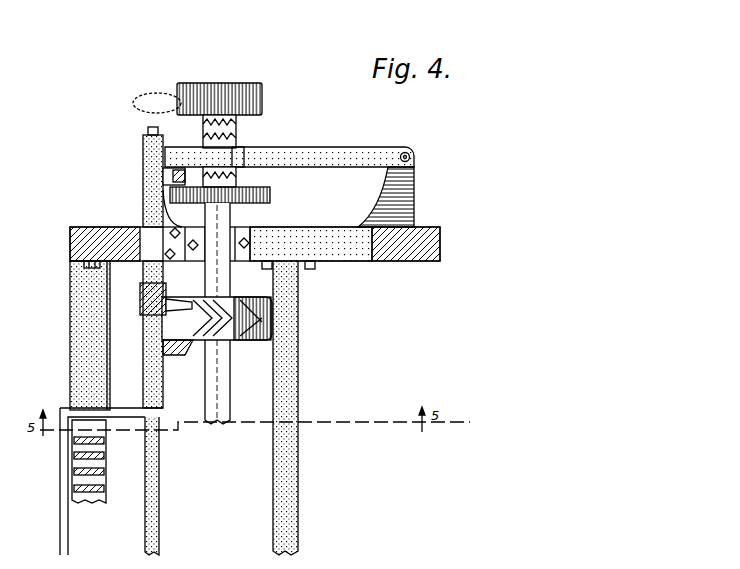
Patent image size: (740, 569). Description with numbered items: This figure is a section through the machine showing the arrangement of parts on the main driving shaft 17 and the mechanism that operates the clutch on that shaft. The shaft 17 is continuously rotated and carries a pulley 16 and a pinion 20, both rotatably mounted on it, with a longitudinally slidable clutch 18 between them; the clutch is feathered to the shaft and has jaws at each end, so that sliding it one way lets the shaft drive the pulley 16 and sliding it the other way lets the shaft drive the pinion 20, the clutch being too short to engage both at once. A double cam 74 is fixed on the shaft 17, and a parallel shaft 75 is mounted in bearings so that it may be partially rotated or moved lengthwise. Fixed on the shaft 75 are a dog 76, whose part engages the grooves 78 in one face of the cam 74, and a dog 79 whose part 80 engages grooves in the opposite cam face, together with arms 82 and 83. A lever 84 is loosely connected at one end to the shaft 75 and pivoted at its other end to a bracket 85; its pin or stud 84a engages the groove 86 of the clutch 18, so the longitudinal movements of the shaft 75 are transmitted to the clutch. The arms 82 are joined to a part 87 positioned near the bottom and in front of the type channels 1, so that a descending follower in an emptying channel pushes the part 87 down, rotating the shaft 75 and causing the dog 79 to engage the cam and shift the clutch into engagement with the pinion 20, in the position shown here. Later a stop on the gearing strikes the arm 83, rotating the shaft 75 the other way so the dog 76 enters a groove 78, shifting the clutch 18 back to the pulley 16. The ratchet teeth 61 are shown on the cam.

The channels 1 is at (106, 472).
The pulley 16 is at (263, 90).
The shaft 17 is at (221, 382).
The clutch 18 is at (238, 149).
The pinion 20 is at (237, 196).
The ratchet teeth 61 is at (262, 323).
The double cam 74 is at (272, 320).
The shaft 75 is at (153, 511).
The dog 76 is at (170, 305).
The grooves 78 is at (214, 300).
The dog 79 is at (160, 361).
The part of dog 80 is at (184, 352).
The arm 82 is at (114, 413).
The arm 83 is at (166, 176).
The lever 84 is at (317, 150).
The pin or stud 84a is at (200, 146).
The bracket 85 is at (410, 201).
The groove 86 is at (243, 157).
The part 87 is at (60, 514).